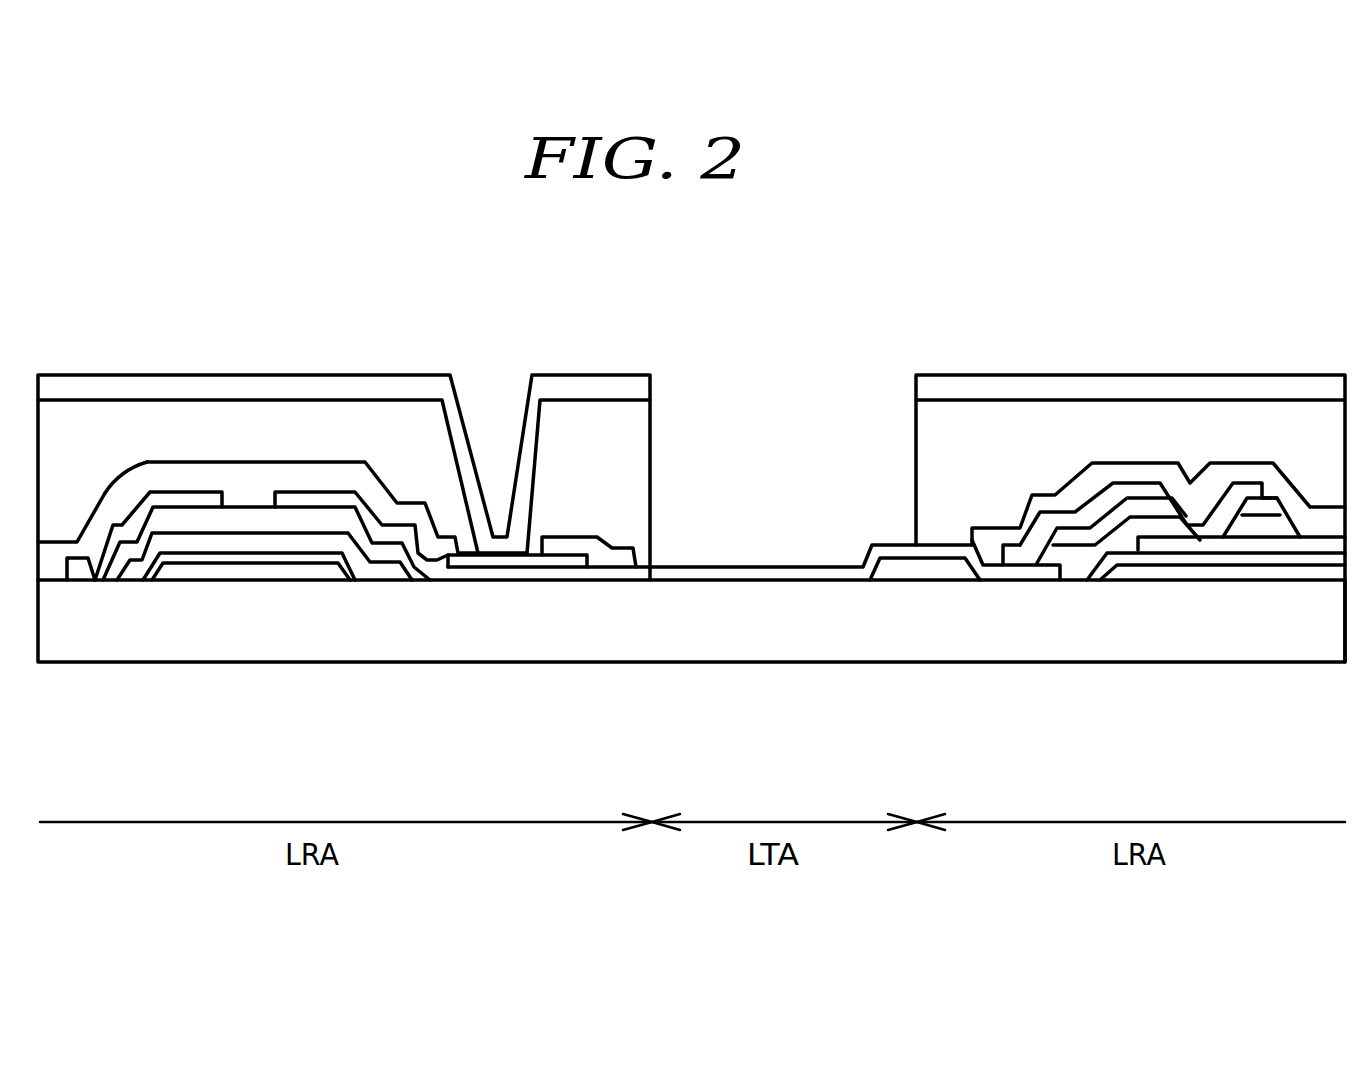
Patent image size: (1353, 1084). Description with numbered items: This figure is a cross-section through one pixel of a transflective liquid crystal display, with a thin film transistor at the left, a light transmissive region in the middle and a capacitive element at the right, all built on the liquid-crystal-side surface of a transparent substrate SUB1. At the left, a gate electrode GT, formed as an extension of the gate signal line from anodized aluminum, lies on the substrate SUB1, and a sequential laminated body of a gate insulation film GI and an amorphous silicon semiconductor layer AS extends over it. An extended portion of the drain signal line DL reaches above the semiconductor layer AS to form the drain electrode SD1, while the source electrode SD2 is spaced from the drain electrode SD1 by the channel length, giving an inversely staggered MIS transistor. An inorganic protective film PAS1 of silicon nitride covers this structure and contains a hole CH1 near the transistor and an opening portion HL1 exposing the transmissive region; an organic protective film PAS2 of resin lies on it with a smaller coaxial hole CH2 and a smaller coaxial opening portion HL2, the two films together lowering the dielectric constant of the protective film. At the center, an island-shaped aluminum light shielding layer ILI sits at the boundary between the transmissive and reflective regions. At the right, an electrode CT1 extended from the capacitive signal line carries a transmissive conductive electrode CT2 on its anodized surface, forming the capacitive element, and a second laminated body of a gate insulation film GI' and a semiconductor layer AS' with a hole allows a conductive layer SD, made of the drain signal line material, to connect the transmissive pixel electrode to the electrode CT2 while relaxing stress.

The transparent substrate SUB1 is at (800, 650).
The inorganic protective film PAS1 is at (172, 477).
The organic protective film PAS2 is at (590, 423).
The opening portion HL1 is at (647, 568).
The opening portion HL2 is at (650, 450).
The hole CH1 is at (542, 533).
The hole CH2 is at (527, 462).
The light shielding layer ILI is at (935, 585).
The drain signal line DL is at (82, 572).
The drain electrode SD1 is at (197, 503).
The source electrode SD2 is at (293, 500).
The conductive layer SD is at (1172, 487).
The semiconductor layer AS is at (283, 447).
The semiconductor layer AS' is at (1094, 638).
The gate insulation film GI is at (264, 426).
The gate insulation film GI' is at (1166, 633).
The gate electrode GT is at (283, 572).
The electrode CT1 is at (1165, 572).
The electrode CT2 is at (1300, 545).